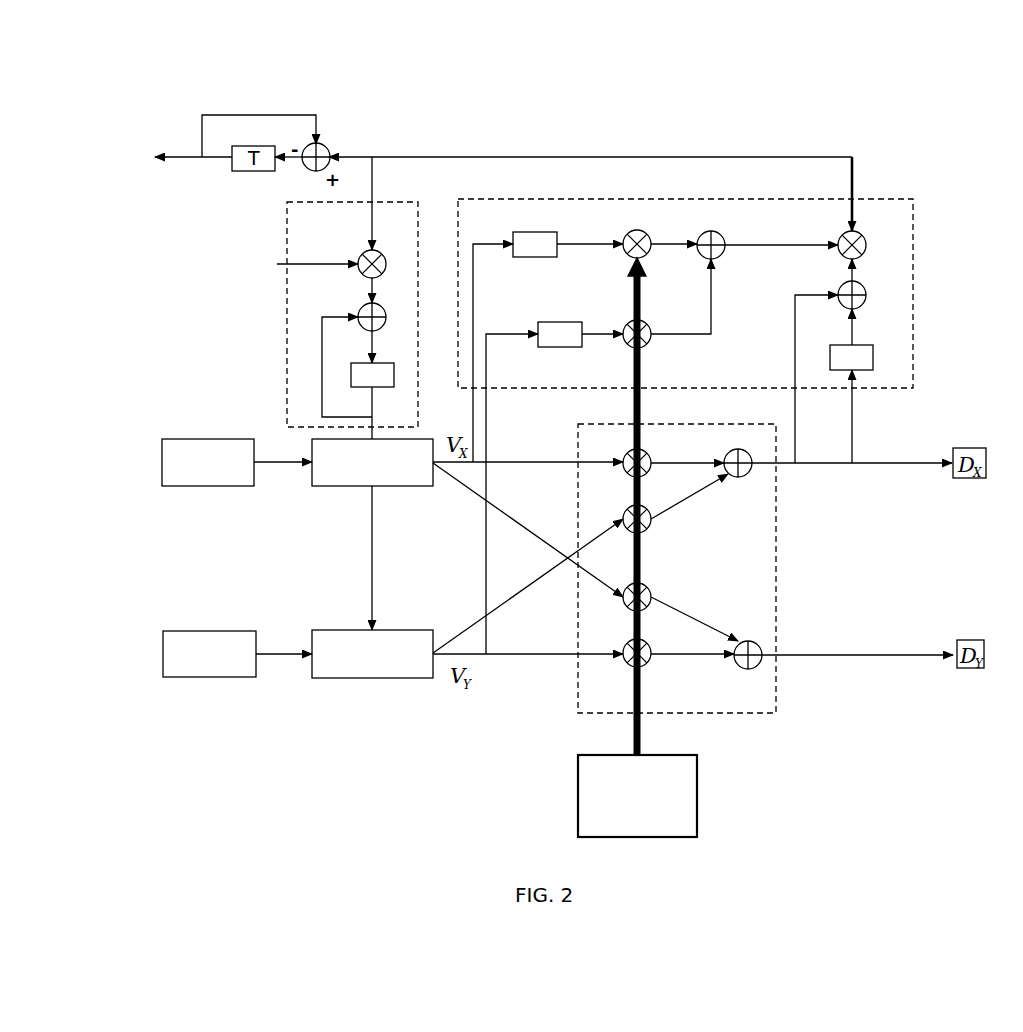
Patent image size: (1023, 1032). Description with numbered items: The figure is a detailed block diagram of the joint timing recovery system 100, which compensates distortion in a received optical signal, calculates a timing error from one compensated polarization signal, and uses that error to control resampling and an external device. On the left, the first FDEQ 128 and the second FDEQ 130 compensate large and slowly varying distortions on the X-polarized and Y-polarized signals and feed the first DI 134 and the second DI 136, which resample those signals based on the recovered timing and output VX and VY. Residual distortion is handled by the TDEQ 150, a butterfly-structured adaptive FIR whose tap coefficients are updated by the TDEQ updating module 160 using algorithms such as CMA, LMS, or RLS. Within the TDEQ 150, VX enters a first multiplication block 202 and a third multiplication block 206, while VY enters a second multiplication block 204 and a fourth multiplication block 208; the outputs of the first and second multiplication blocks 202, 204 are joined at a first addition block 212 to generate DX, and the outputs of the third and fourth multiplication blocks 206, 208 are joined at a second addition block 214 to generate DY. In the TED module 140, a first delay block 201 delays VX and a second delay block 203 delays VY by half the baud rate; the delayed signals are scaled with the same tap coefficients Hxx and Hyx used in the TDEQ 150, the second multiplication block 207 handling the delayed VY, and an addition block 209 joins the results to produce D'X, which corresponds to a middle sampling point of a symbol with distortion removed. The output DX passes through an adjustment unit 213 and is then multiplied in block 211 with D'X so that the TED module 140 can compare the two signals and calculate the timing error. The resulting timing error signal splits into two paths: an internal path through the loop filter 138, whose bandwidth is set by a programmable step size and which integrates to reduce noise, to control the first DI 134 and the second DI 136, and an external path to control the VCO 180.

The joint timing recovery system 100 is at (97, 87).
The first FDEQ 128 is at (183, 487).
The second FDEQ 130 is at (207, 675).
The first DI 134 is at (350, 487).
The second DI 136 is at (367, 628).
The loop filter 138 is at (287, 314).
The TED module 140 is at (732, 310).
The TDEQ 150 is at (693, 506).
The TDEQ updating module 160 is at (578, 782).
The VCO 180 is at (101, 176).
The first delay block 201 is at (548, 230).
The first multiplication block 202 is at (623, 470).
The second delay block 203 is at (548, 320).
The second multiplication block 204 is at (623, 528).
The third multiplication block 206 is at (630, 605).
The second multiplication block 207 is at (650, 340).
The fourth multiplication block 208 is at (628, 660).
The addition block 209 is at (715, 228).
The block 211 is at (867, 248).
The first addition block 212 is at (753, 469).
The adjustment unit 213 is at (867, 303).
The second addition block 214 is at (760, 663).